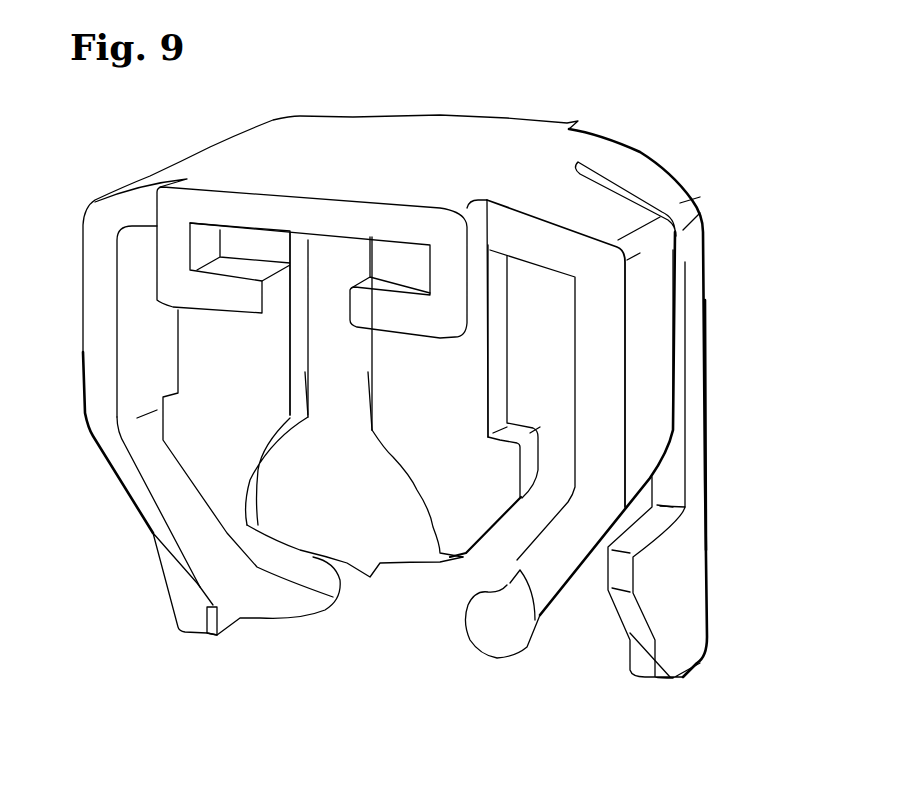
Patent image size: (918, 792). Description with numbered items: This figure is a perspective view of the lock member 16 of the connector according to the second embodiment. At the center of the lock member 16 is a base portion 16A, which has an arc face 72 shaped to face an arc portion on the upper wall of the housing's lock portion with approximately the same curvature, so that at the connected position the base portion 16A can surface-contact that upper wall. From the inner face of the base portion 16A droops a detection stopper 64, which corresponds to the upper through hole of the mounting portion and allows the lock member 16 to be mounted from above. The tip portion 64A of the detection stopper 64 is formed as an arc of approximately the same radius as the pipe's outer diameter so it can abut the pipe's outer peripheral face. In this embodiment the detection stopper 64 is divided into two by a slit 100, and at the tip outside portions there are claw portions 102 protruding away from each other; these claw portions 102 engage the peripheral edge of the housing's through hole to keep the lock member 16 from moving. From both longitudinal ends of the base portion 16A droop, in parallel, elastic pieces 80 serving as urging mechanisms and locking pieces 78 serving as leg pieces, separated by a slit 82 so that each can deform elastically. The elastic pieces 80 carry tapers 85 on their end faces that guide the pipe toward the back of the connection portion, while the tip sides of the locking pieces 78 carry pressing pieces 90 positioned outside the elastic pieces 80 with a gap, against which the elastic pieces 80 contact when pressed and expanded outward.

The lock member 16 is at (620, 88).
The base portion 16A is at (347, 143).
The detection stopper 64 is at (391, 463).
The tip portion 64A is at (355, 565).
The arc face 72 is at (535, 270).
The locking piece 78 is at (698, 338).
The elastic piece 80 is at (83, 393).
The slit 82 is at (680, 280).
The taper 85 is at (282, 607).
The pressing piece 90 is at (172, 590).
The slit 100 is at (302, 373).
The claw portion 102 is at (176, 393).